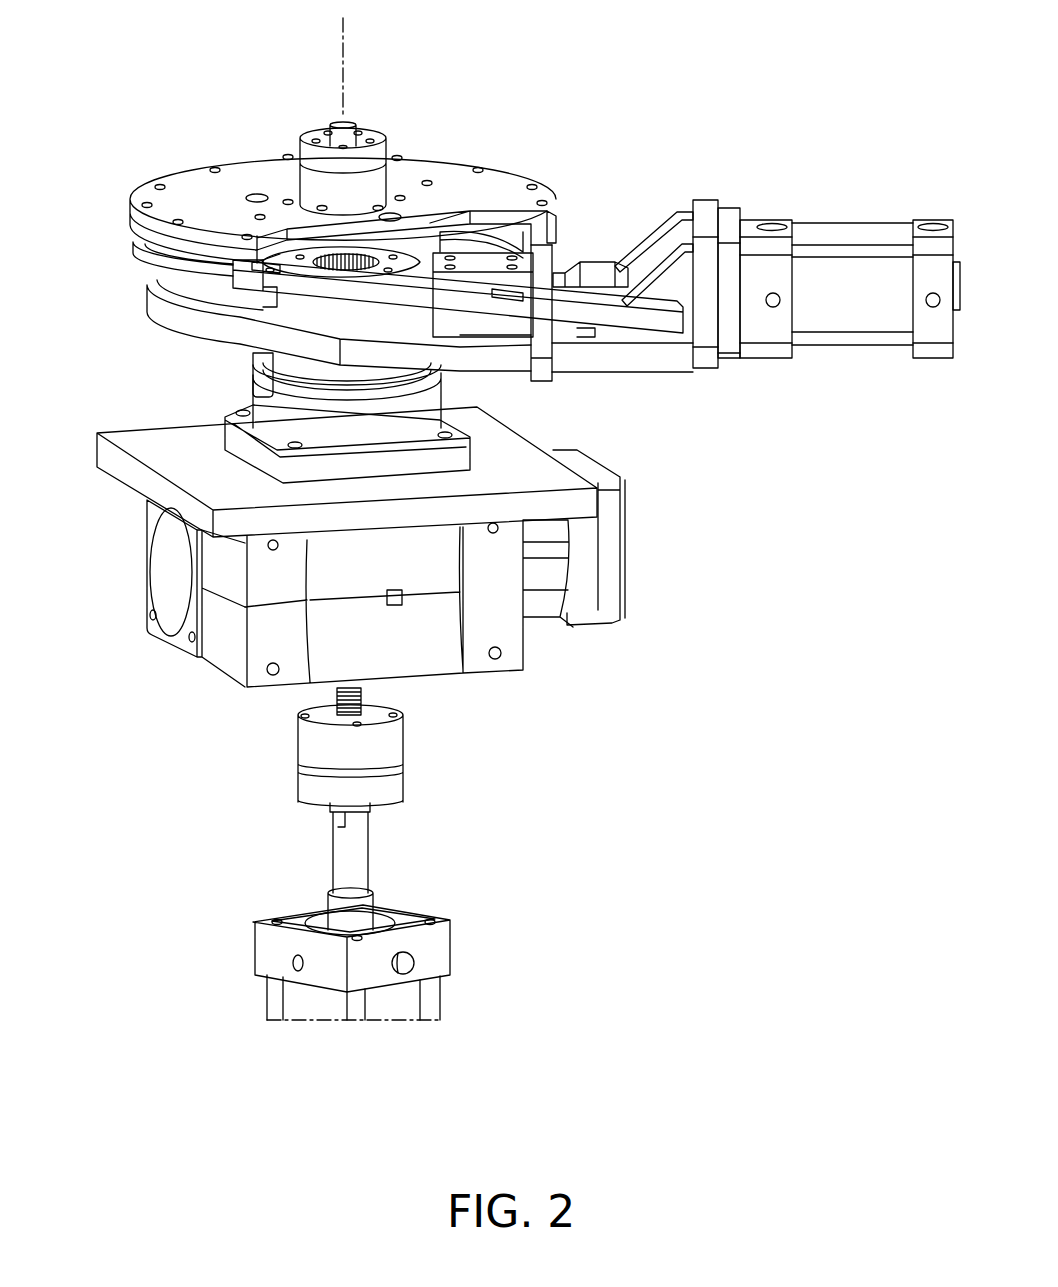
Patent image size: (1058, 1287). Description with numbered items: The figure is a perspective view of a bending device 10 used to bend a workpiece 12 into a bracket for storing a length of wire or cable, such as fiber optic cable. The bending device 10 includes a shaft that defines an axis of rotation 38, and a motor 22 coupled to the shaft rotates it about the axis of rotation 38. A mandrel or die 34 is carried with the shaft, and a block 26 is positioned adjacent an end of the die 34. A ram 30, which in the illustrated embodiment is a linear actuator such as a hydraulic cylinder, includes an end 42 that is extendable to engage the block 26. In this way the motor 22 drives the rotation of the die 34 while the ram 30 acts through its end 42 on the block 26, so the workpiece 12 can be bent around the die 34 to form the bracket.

The bending device 10 is at (107, 680).
The workpiece 12 is at (670, 322).
The motor 22 is at (412, 1003).
The block 26 is at (490, 323).
The ram 30 is at (661, 246).
The die 34 is at (133, 259).
The axis of rotation 38 is at (345, 78).
The end 42 is at (593, 266).